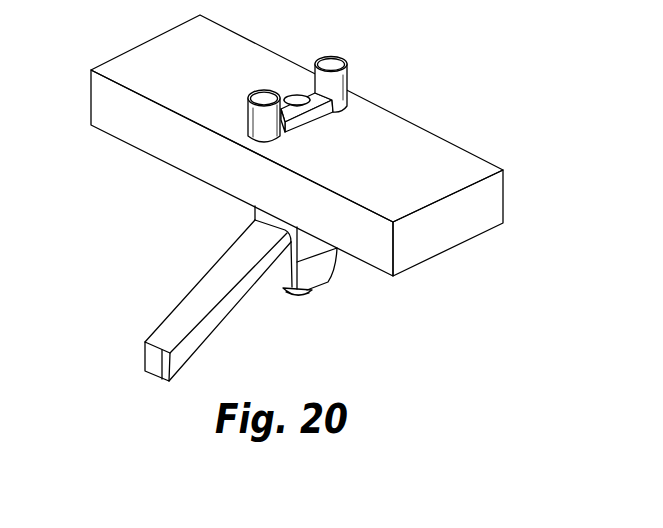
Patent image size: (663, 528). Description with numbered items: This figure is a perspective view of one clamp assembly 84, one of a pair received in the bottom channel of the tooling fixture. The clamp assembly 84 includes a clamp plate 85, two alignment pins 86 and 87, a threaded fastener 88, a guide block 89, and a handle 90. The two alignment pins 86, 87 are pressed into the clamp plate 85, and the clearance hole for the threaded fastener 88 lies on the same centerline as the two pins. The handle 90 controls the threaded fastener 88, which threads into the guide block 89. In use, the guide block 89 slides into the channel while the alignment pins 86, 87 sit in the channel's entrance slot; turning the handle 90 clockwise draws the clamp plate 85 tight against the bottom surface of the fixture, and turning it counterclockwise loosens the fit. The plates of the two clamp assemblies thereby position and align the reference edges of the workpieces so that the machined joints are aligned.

The clamp assembly 84 is at (505, 82).
The clamp plate 85 is at (376, 247).
The alignment pin 86 is at (253, 122).
The alignment pin 87 is at (348, 80).
The threaded fastener 88 is at (289, 94).
The guide block 89 is at (338, 121).
The handle 90 is at (200, 301).